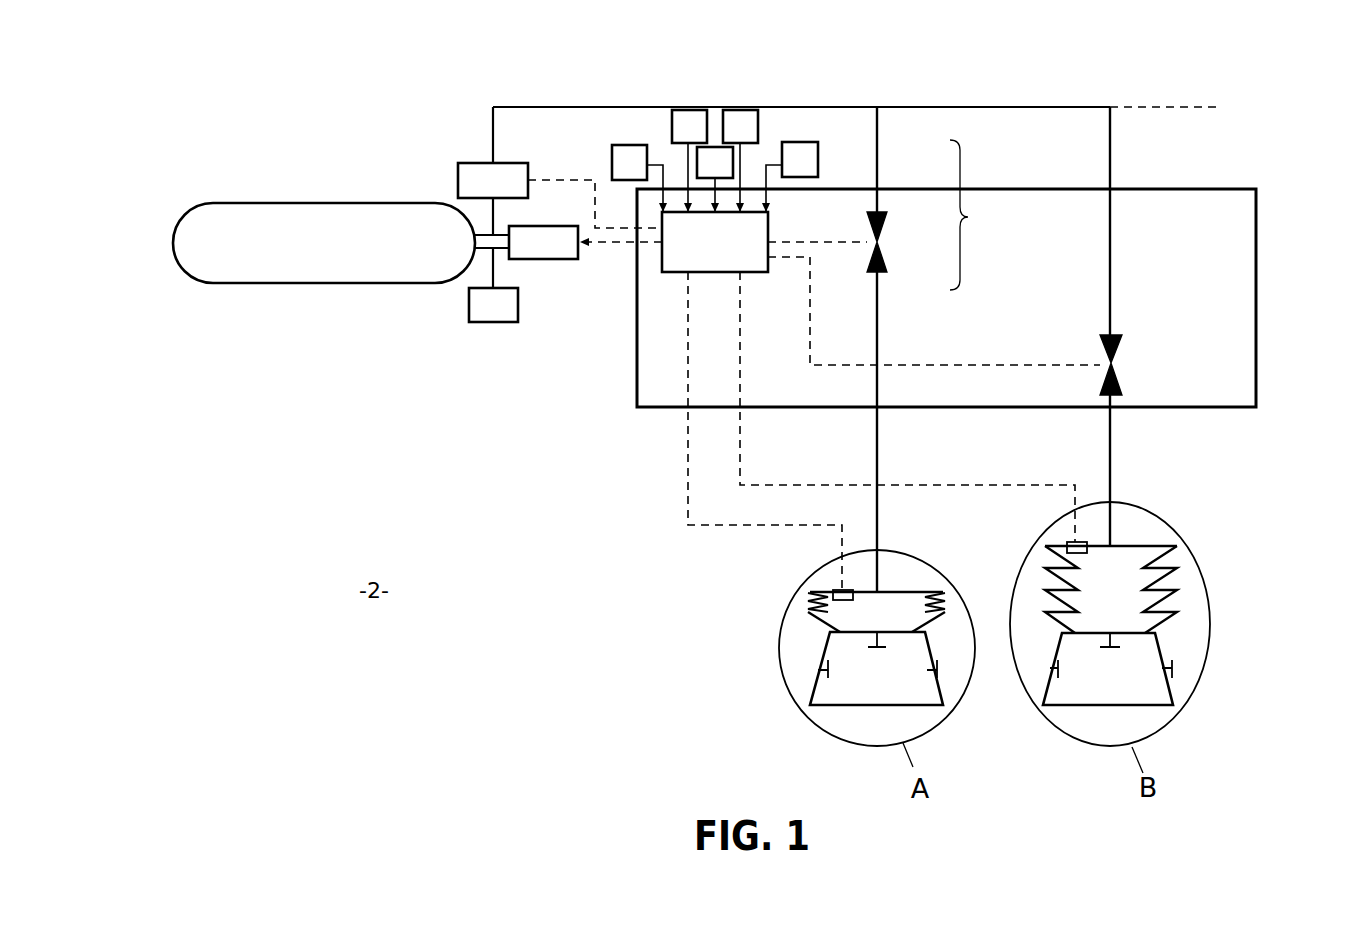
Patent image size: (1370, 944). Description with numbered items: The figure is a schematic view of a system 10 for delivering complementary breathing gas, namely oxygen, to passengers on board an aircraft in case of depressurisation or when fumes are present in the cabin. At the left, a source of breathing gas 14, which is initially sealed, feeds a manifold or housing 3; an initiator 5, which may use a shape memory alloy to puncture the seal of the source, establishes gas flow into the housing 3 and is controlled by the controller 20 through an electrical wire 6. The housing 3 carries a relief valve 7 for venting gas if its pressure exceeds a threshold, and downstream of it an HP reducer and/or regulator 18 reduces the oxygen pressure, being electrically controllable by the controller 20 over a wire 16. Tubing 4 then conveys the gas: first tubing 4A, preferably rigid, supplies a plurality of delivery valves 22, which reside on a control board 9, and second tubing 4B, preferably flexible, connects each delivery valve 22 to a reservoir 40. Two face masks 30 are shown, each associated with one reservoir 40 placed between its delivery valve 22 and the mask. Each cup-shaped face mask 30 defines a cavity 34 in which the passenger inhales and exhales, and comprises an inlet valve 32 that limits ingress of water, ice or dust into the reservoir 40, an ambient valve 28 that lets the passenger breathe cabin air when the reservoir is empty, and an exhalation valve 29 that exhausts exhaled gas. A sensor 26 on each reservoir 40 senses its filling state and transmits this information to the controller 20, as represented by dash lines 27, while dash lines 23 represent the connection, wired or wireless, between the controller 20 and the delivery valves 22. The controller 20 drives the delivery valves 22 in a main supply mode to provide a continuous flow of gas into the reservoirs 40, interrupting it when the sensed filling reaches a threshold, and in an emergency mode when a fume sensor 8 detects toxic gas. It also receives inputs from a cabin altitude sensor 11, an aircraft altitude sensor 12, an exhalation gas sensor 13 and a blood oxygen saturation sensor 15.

The manifold or housing 3 is at (495, 233).
The tubing 4 is at (973, 215).
The first tubing 4A is at (878, 174).
The second tubing 4B is at (878, 298).
The initiator 5 is at (538, 256).
The electrical wire 6 is at (604, 252).
The relief valve 7 is at (485, 319).
The fume sensor 8 is at (792, 172).
The control board 9 is at (1189, 252).
The system 10 is at (1281, 126).
The cabin altitude sensor 11 is at (616, 176).
The aircraft altitude sensor 12 is at (676, 140).
The exhalation gas sensor 13 is at (702, 177).
The source of breathing gas 14 is at (318, 260).
The blood oxygen saturation sensor 15 is at (727, 140).
The wire 16 is at (558, 178).
The HP reducer and/or regulator 18 is at (478, 194).
The controller 20 is at (699, 256).
The delivery valve 22 is at (870, 229).
The dash lines (connection) 23 is at (830, 243).
The sensor 26 is at (833, 595).
The dash lines (signal transmission) 27 is at (687, 478).
The ambient valve 28 is at (822, 668).
The exhalation valve 29 is at (938, 667).
The face mask 30 is at (790, 673).
The inlet valve 32 is at (873, 650).
The cavity 34 is at (837, 693).
The reservoir 40 is at (901, 586).